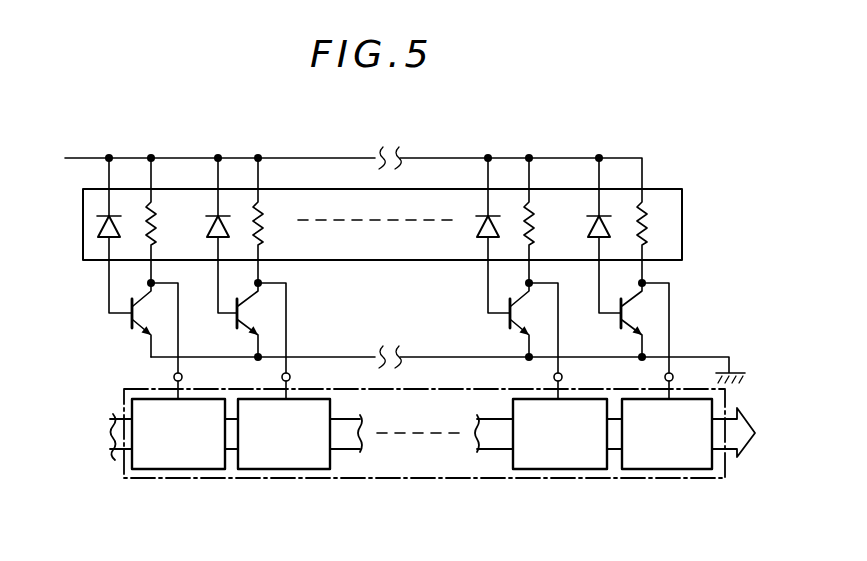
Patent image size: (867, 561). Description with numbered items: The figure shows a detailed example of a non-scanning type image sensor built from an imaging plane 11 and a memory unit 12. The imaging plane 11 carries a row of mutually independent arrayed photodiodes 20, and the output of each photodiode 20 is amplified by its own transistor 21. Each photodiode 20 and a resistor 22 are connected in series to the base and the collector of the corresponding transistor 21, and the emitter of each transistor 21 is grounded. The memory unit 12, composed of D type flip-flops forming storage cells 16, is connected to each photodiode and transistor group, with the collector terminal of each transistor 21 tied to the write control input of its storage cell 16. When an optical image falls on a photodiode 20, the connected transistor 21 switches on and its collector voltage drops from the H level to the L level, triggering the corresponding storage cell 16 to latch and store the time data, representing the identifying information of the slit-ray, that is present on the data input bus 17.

The imaging plane 11 is at (83, 212).
The photodiode 20 is at (97, 229).
The resistor 22 is at (155, 210).
The transistor 21 is at (130, 321).
The data input bus 17 is at (115, 460).
The storage cell 16 is at (200, 469).
The memory unit 12 is at (477, 478).